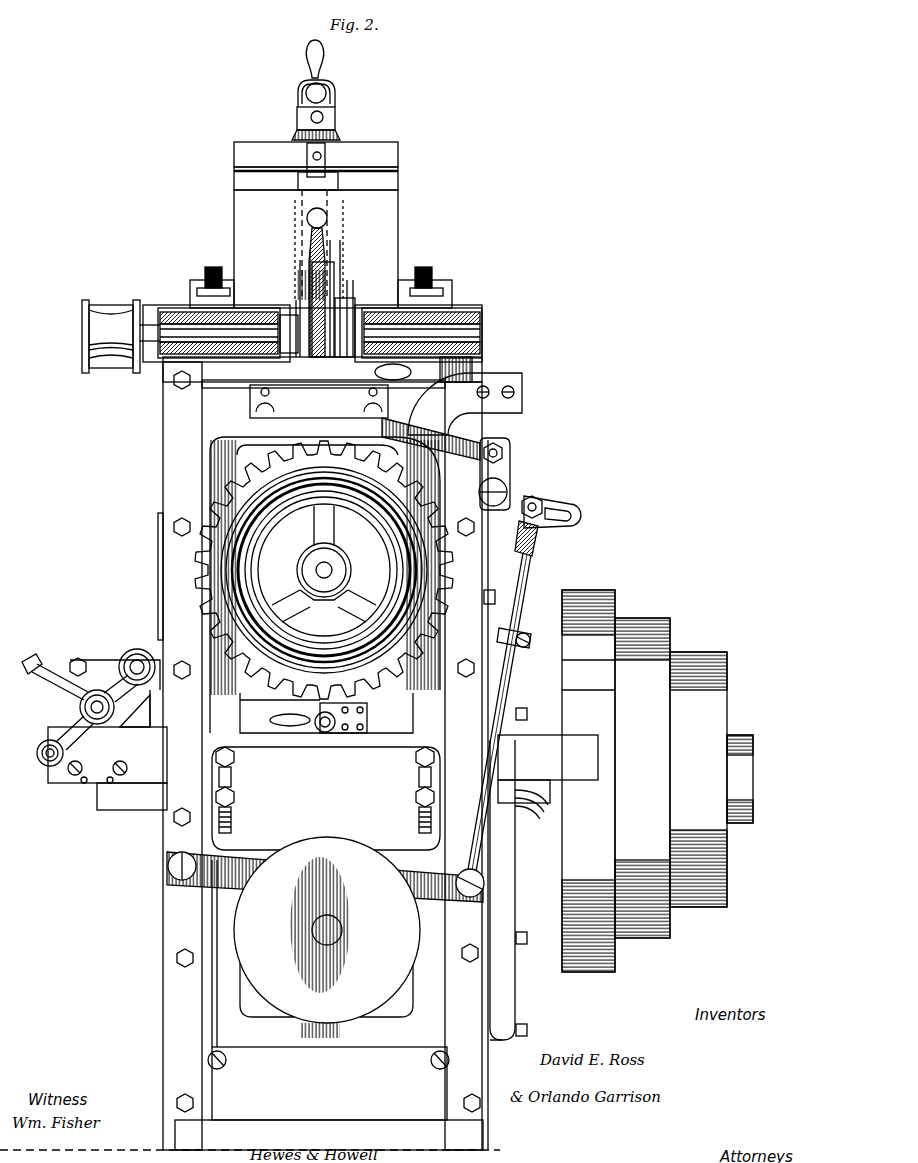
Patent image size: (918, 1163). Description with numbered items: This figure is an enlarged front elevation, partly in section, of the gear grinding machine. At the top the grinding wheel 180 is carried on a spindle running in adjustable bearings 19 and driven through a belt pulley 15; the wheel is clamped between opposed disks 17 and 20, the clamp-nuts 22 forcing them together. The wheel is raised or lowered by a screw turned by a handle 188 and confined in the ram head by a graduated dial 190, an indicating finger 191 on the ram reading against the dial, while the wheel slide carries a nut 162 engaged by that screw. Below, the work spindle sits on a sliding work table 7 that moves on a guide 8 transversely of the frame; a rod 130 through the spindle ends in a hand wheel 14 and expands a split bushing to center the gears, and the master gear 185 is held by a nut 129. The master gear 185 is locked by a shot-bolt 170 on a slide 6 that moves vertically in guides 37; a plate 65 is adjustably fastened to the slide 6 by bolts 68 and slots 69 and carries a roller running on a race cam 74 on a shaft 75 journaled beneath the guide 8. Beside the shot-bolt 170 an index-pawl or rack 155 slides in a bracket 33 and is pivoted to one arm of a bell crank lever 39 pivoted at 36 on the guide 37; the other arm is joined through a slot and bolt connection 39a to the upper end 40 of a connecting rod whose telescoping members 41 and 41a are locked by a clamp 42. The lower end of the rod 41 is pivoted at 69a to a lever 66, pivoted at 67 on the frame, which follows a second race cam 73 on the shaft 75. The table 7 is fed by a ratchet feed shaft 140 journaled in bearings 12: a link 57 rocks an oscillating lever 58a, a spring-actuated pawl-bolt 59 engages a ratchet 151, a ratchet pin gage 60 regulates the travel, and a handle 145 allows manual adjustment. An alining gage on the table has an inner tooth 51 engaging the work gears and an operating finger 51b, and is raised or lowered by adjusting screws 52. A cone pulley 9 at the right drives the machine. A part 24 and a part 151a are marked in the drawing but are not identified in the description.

The slide 6 is at (238, 448).
The sliding work table 7 is at (548, 769).
The guide 8 is at (133, 806).
The cone pulley 9 is at (657, 781).
The bearings 12 is at (110, 742).
The hand wheel 14 is at (232, 573).
The belt pulley 15 is at (121, 336).
The disk 17 is at (331, 262).
The adjustable bearings 19 is at (185, 312).
The disk 20 is at (332, 275).
The clamp-nuts 22 is at (350, 298).
The column 24 is at (393, 372).
The bracket 33 is at (503, 385).
The pivot 36 is at (502, 484).
The guides 37 is at (172, 452).
The bell crank lever 39 is at (580, 516).
The slot and bolt connection 39a is at (547, 503).
The upper end of connecting rod 40 is at (538, 541).
The upper member of connecting rod 41 is at (527, 584).
The lower member of connecting rod 41a is at (482, 845).
The clamp 42 is at (498, 636).
The inner tooth 51 is at (318, 704).
The operating finger 51b is at (282, 718).
The adjusting screws 52 is at (366, 707).
The link 57 is at (136, 649).
The oscillating lever 58a is at (79, 656).
The pawl-bolt 59 is at (33, 657).
The ratchet pin gage 60 is at (52, 741).
The plate 65 is at (326, 798).
The lever 66 is at (246, 858).
The pivot 67 is at (170, 872).
The bolts 68 is at (236, 787).
The slots 69 is at (233, 825).
The pivotal connection 69a is at (486, 884).
The race cam 73 is at (327, 937).
The race cam 74 is at (252, 965).
The shaft 75 is at (344, 930).
The nut 129 is at (324, 585).
The rod 130 is at (330, 563).
The ratchet feed shaft 140 is at (80, 707).
The handle 145 is at (44, 764).
The ratchet 151 is at (145, 720).
The pin 151a is at (322, 734).
The index-pawl or rack 155 is at (317, 435).
The nut 162 is at (306, 218).
The shot-bolt 170 is at (319, 401).
The grinding wheel 180 is at (326, 232).
The master gear 185 is at (232, 495).
The handle 188 is at (309, 60).
The dial 190 is at (342, 138).
The indicating finger 191 is at (305, 147).